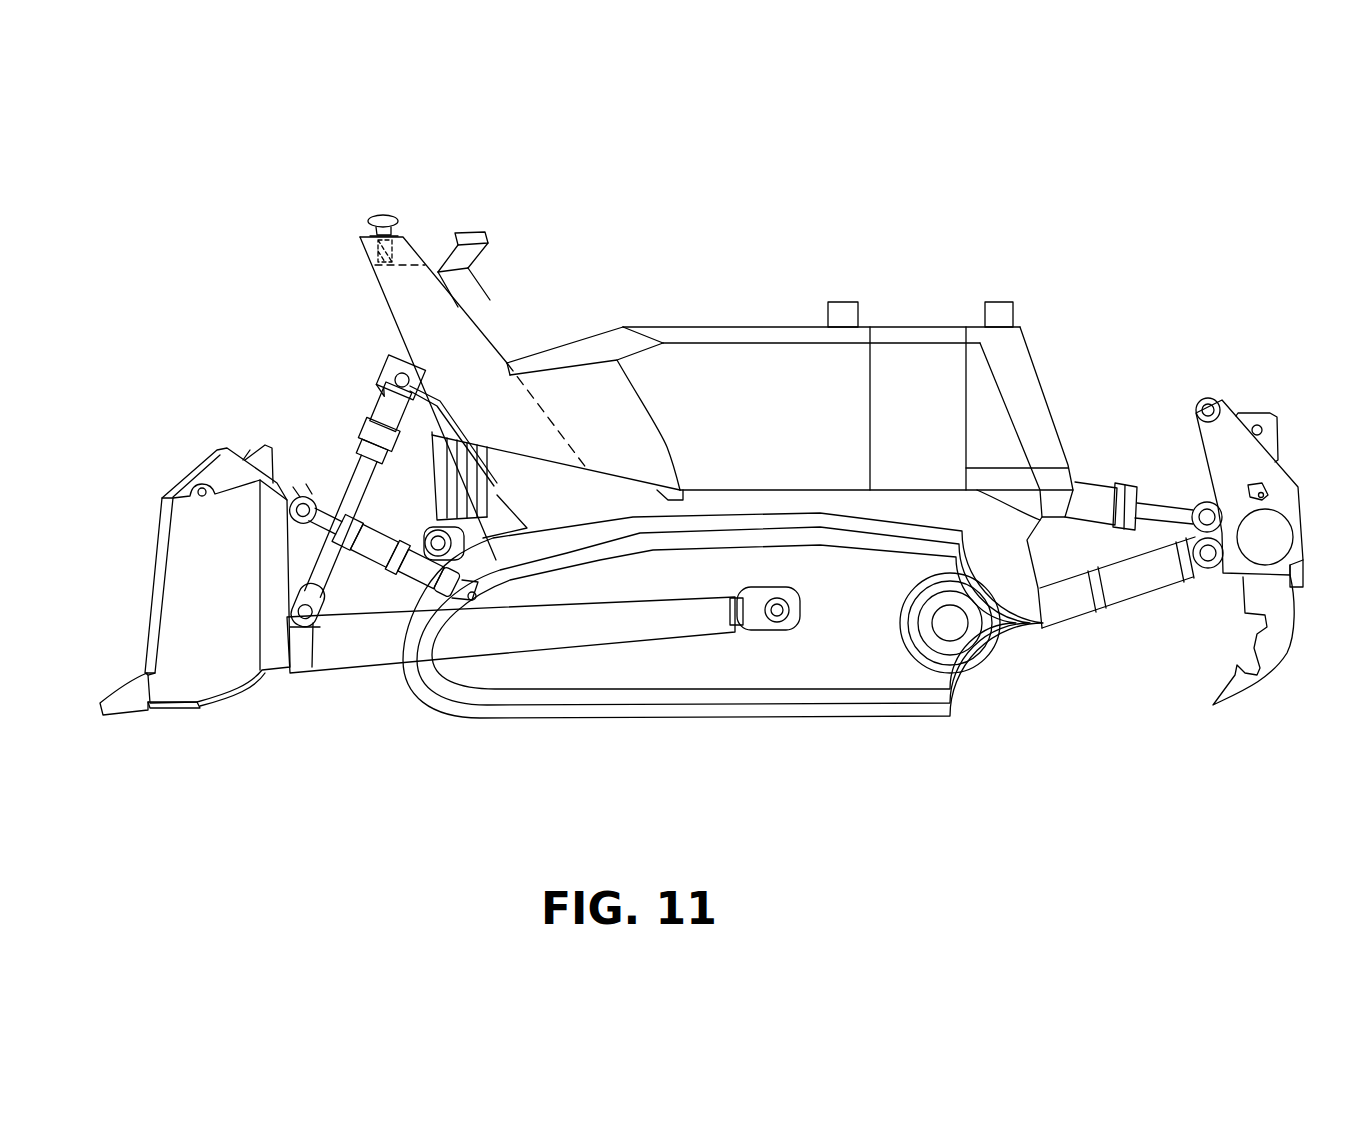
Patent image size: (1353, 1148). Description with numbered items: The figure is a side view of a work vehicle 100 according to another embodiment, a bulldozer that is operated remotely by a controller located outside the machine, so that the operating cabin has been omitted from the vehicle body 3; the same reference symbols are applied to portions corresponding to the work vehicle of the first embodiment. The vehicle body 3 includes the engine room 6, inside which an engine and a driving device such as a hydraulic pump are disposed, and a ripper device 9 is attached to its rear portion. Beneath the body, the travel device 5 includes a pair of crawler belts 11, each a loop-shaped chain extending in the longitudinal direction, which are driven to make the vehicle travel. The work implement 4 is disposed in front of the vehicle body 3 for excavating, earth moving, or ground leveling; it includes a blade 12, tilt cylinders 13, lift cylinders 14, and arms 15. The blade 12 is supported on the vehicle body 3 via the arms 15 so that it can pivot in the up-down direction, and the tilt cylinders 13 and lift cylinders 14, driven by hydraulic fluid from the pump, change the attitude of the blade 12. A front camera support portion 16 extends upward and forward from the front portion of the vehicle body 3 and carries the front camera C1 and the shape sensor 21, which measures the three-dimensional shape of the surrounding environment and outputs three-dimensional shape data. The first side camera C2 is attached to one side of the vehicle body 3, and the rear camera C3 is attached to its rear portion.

The work vehicle 100 is at (876, 178).
The vehicle body 3 is at (755, 307).
The work implement 4 is at (190, 430).
The travel device 5 is at (1050, 680).
The engine room 6 is at (608, 350).
The ripper device 9 is at (1152, 392).
The crawler belt 11 is at (735, 718).
The blade 12 is at (192, 690).
The tilt cylinder 13 is at (377, 548).
The lift cylinder 14 is at (470, 265).
The arm 15 is at (528, 623).
The front camera support portion 16 is at (410, 325).
The shape sensor 21 is at (360, 226).
The front camera C1 is at (385, 265).
The first side camera C2 is at (845, 310).
The rear camera C3 is at (1013, 312).